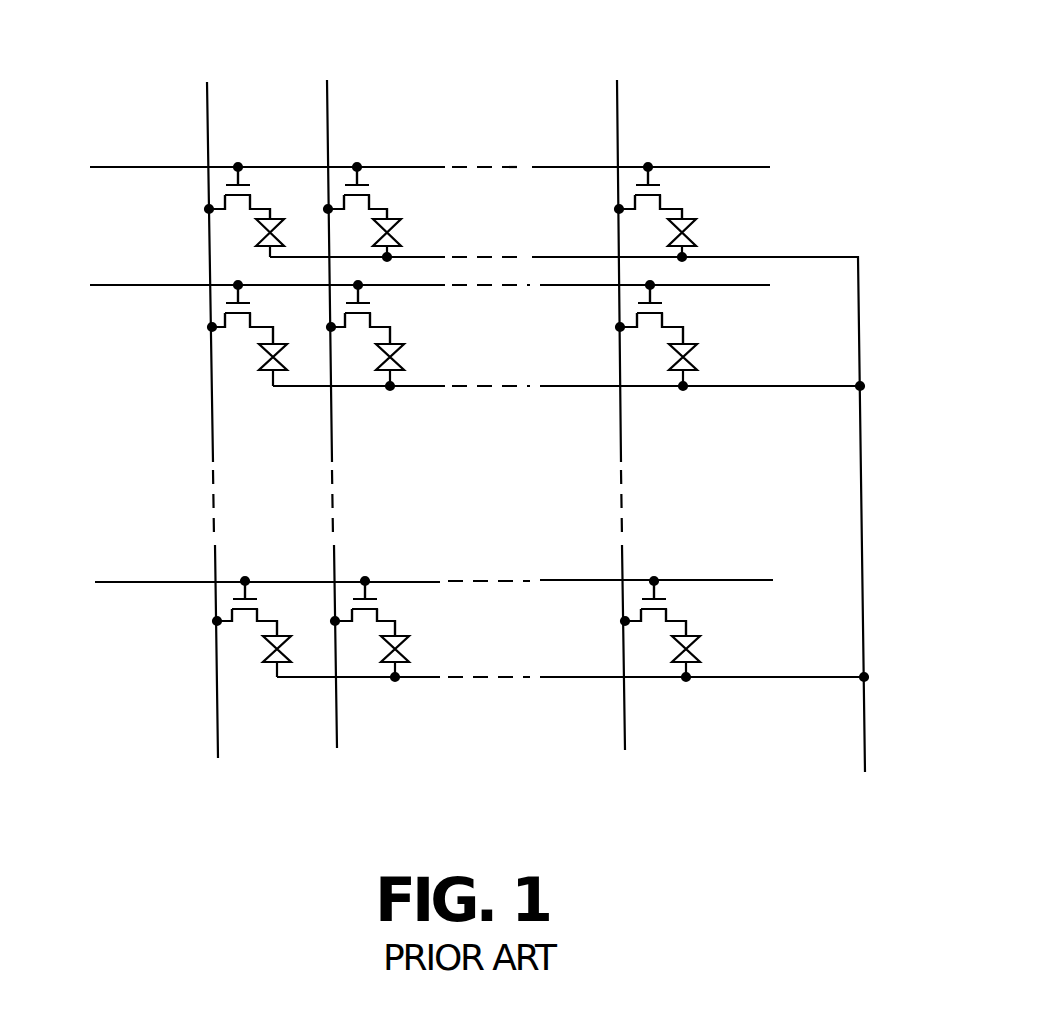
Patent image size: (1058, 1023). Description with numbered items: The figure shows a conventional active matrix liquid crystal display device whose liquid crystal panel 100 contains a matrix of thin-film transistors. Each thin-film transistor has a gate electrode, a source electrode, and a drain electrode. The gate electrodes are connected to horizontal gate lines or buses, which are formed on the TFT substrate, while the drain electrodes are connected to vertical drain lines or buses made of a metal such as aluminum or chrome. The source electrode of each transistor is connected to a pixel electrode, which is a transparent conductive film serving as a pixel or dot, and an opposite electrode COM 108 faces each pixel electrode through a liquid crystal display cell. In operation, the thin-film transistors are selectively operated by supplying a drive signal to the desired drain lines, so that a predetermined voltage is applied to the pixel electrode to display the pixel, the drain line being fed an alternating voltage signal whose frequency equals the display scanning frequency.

The liquid crystal panel 100 is at (767, 125).
The opposite electrode 108 is at (591, 536).